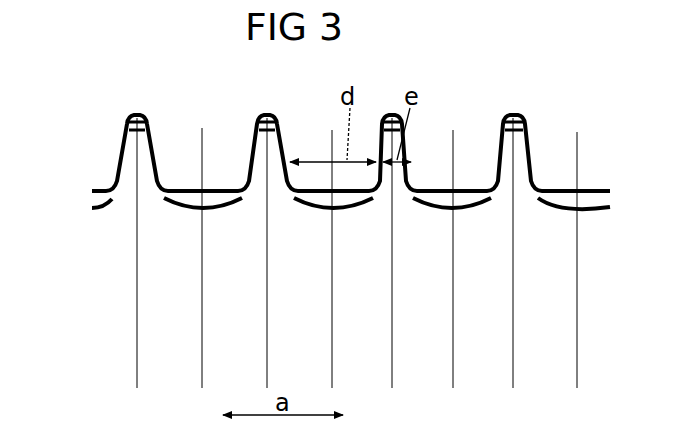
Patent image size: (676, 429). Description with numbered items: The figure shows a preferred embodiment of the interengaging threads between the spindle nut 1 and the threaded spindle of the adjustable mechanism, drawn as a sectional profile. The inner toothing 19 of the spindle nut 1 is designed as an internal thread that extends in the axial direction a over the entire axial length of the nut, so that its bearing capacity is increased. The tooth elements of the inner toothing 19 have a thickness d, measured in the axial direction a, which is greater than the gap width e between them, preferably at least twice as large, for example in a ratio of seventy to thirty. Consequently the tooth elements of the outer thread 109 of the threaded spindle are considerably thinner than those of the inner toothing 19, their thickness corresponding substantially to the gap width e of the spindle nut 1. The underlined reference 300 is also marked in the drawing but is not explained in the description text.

The spindle nut 1 is at (458, 89).
The inner toothing 19 is at (103, 188).
The outer thread 109 is at (139, 125).
The direction arrow 300 is at (442, 294).